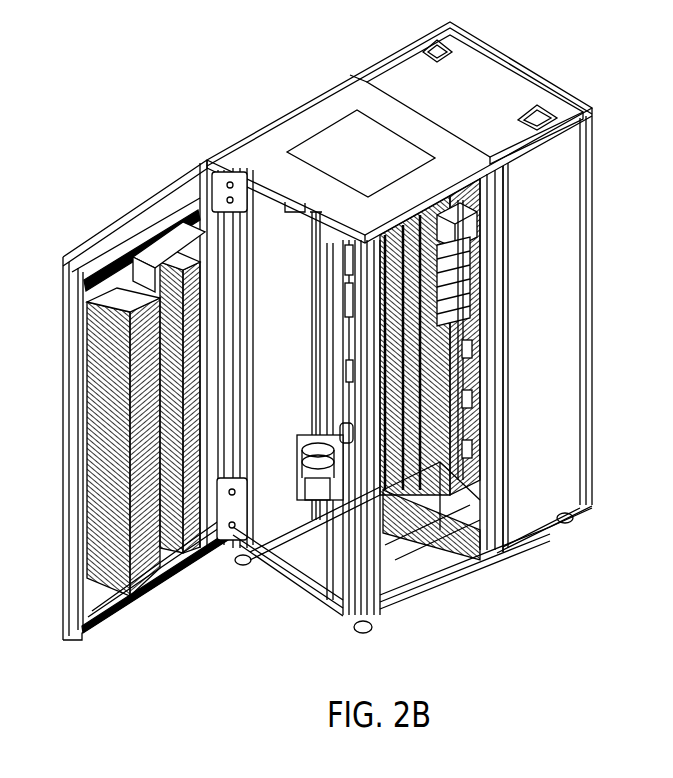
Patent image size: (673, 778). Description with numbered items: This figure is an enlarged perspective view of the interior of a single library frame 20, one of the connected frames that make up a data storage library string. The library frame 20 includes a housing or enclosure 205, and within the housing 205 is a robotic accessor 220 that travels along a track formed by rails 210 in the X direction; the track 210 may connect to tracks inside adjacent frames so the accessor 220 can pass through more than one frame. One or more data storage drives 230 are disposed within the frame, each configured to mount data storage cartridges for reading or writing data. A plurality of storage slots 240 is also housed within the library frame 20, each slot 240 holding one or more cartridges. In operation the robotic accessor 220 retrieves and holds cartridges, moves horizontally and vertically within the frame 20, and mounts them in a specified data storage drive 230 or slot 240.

The library frame 20 is at (0, 4).
The housing 205 is at (543, 238).
The rails 210 is at (456, 549).
The robotic accessor 220 is at (329, 504).
The data storage drive 230 is at (470, 282).
The storage slot 240 is at (434, 387).